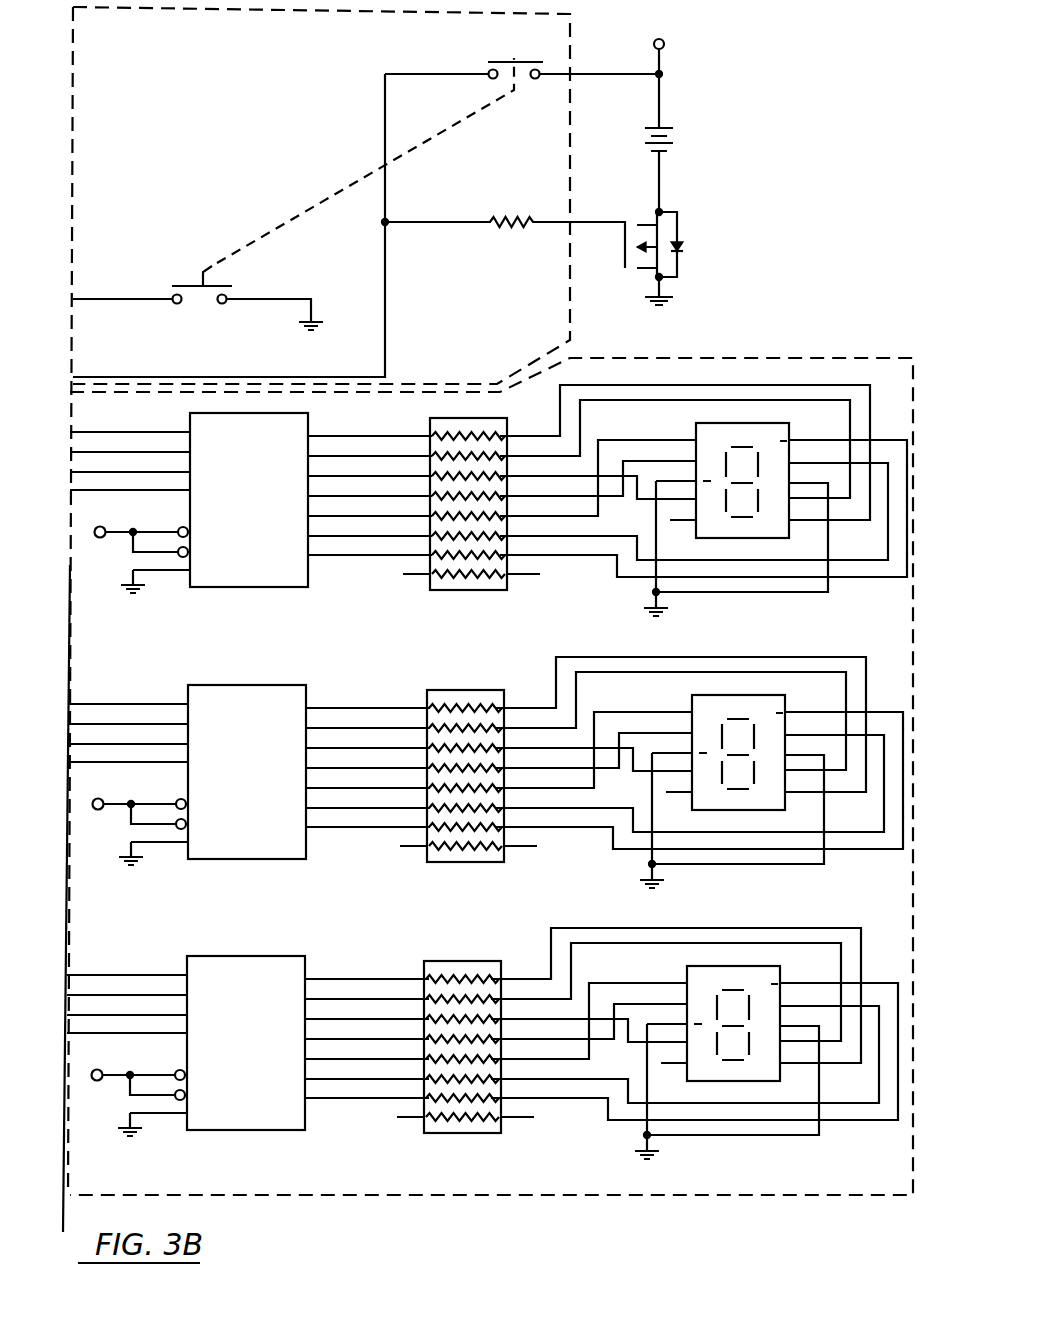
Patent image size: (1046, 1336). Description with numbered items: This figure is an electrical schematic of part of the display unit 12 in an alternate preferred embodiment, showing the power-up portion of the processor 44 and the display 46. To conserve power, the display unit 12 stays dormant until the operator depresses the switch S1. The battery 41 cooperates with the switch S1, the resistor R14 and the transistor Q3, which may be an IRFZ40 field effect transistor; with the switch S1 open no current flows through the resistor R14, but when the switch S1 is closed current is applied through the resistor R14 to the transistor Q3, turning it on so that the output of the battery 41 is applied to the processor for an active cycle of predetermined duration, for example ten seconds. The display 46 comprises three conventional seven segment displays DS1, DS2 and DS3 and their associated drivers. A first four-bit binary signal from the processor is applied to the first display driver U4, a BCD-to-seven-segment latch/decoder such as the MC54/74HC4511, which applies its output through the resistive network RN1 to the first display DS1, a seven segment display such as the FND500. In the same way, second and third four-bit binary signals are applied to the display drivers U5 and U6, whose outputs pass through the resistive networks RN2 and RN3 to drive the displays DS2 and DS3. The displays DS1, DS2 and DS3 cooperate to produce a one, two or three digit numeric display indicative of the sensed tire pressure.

The display unit 12 is at (722, 95).
The battery 41 is at (674, 146).
The processor 44 is at (570, 28).
The display 46 is at (822, 358).
The switch S1 is at (366, 183).
The resistor R14 is at (505, 233).
The transistor Q3 is at (693, 228).
The first display driver U4 is at (260, 410).
The second display driver U5 is at (249, 775).
The third display driver U6 is at (248, 1046).
The resistive network RN1 is at (491, 410).
The resistive network RN2 is at (468, 787).
The resistive network RN3 is at (465, 1058).
The first display DS1 is at (768, 417).
The second display DS2 is at (699, 772).
The third display DS3 is at (694, 1043).